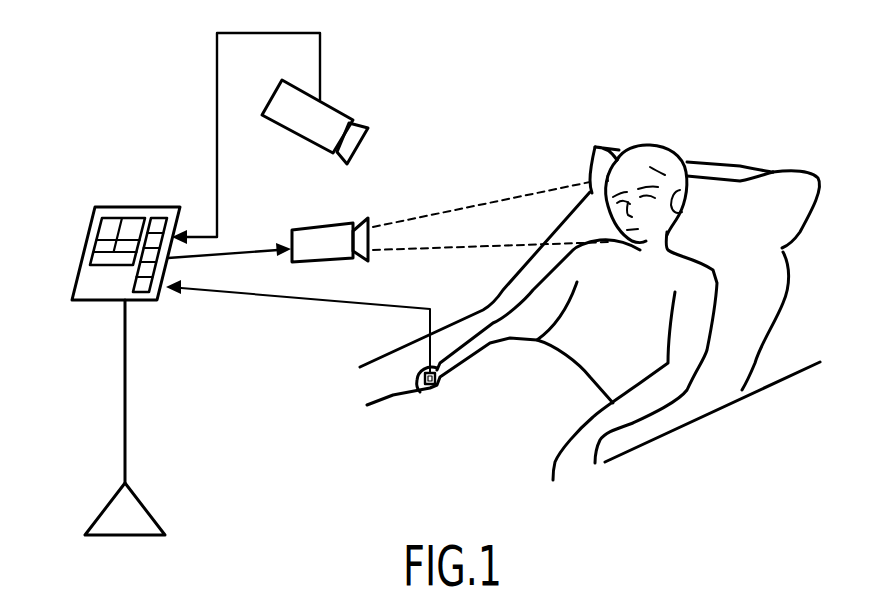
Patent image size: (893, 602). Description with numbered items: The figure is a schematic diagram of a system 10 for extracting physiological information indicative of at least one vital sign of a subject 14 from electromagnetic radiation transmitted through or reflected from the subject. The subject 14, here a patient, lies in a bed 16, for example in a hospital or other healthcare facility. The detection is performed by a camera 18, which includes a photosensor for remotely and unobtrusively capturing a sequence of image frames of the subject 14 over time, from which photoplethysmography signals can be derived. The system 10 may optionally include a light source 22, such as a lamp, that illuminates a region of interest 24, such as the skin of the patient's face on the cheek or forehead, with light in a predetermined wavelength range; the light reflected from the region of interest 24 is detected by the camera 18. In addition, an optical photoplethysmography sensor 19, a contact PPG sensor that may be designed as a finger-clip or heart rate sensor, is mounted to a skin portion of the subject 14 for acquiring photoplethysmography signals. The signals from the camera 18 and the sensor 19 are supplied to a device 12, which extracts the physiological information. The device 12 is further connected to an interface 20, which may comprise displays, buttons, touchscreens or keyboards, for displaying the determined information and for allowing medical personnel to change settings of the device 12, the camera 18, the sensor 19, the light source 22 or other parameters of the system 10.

The system 10 is at (147, 130).
The device 12 is at (97, 283).
The subject 14 is at (690, 260).
The bed 16 is at (760, 327).
The camera 18 is at (340, 108).
The optical photoplethysmography sensor 19 is at (437, 385).
The interface 20 is at (88, 237).
The light source 22 is at (303, 227).
The region of interest 24 is at (593, 193).